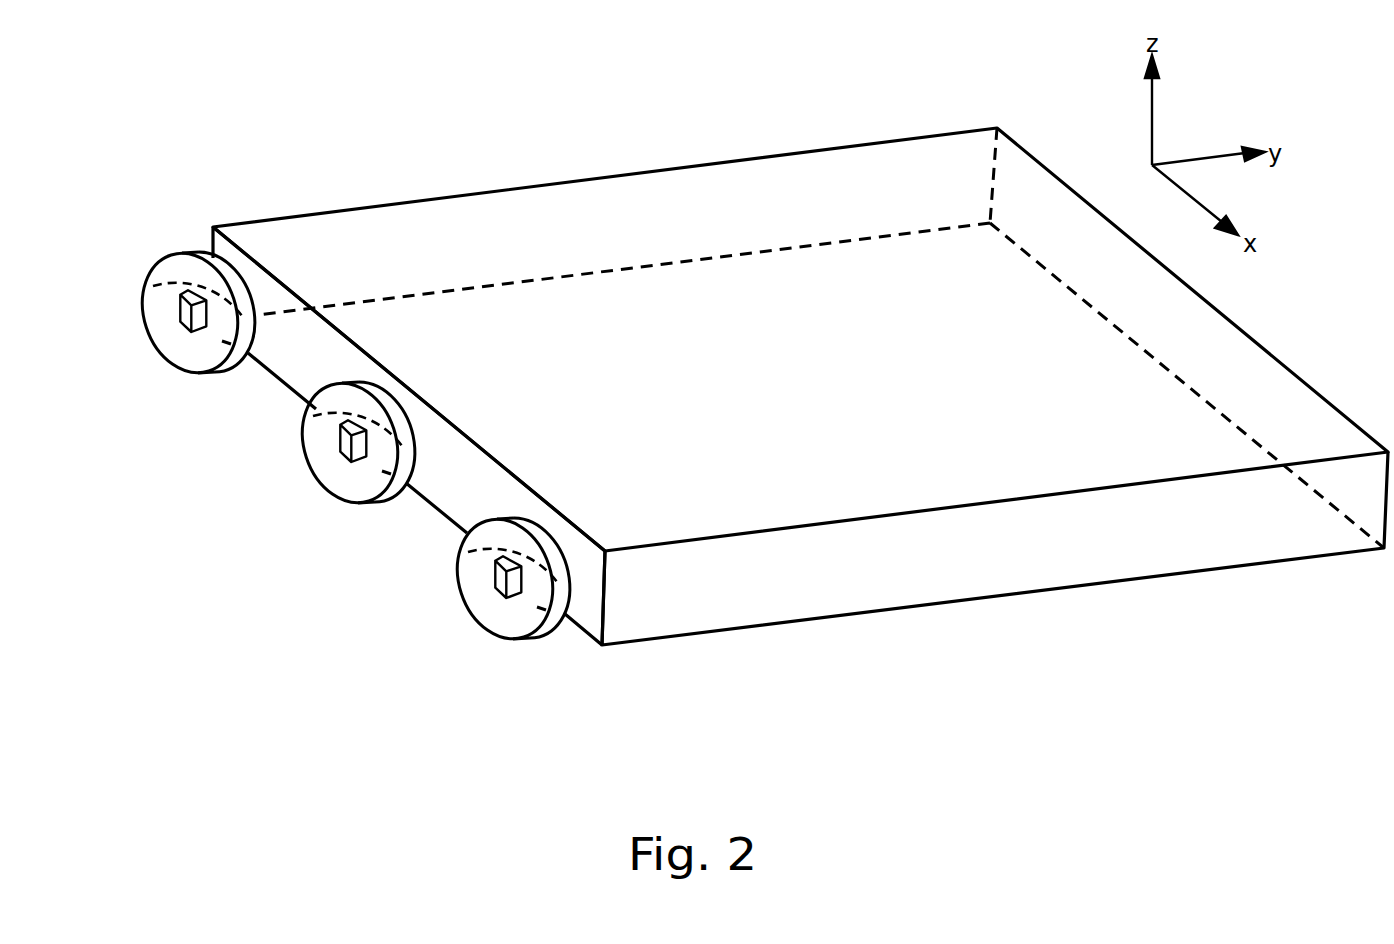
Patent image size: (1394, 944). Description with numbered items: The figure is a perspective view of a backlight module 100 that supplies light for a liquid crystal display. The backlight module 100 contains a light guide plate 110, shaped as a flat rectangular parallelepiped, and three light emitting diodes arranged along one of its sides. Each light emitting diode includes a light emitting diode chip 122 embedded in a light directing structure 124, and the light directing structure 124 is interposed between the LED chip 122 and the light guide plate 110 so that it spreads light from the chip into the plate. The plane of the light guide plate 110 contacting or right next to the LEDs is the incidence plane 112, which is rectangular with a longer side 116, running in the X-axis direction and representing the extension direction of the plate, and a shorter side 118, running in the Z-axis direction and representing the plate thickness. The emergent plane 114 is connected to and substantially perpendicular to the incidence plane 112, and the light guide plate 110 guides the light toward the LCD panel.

The backlight module 100 is at (215, 123).
The light guide plate 110 is at (800, 448).
The incidence plane 112 is at (587, 613).
The emergent plane 114 is at (732, 492).
The longer side 116 is at (478, 442).
The shorter side 118 is at (607, 603).
The light emitting diode chip 122 is at (342, 462).
The light directing structure 124 is at (320, 437).